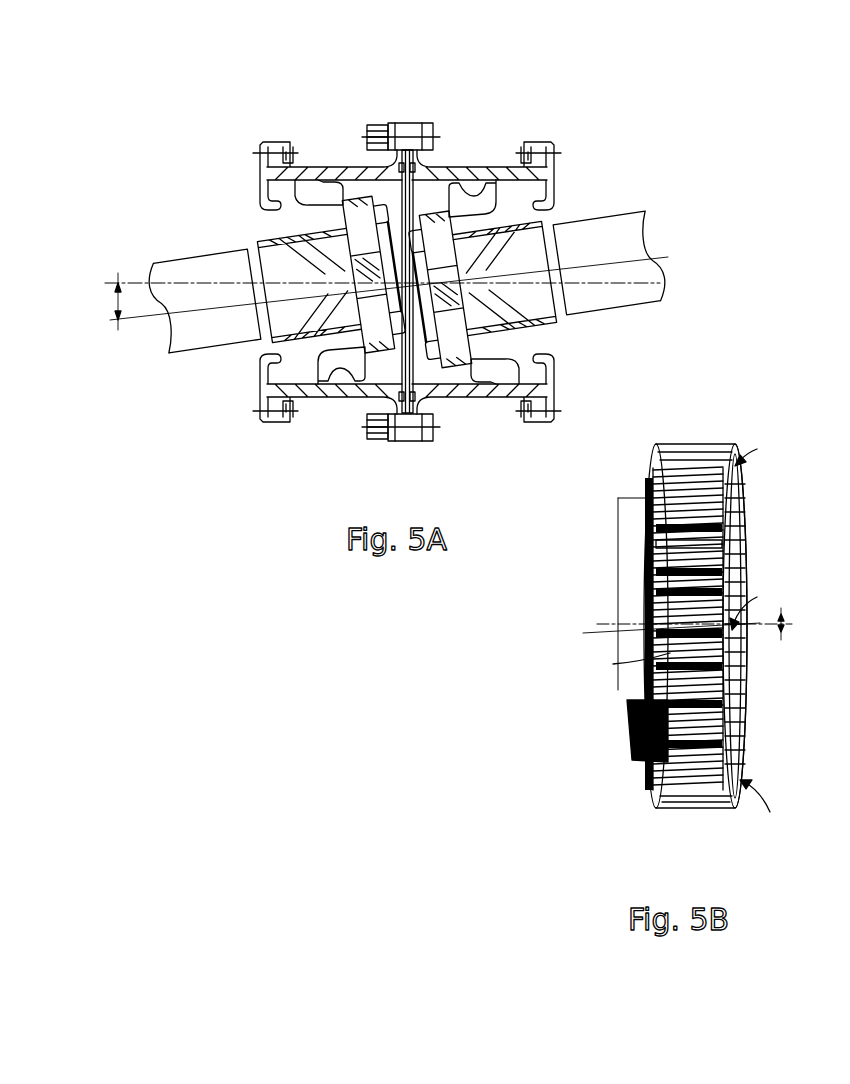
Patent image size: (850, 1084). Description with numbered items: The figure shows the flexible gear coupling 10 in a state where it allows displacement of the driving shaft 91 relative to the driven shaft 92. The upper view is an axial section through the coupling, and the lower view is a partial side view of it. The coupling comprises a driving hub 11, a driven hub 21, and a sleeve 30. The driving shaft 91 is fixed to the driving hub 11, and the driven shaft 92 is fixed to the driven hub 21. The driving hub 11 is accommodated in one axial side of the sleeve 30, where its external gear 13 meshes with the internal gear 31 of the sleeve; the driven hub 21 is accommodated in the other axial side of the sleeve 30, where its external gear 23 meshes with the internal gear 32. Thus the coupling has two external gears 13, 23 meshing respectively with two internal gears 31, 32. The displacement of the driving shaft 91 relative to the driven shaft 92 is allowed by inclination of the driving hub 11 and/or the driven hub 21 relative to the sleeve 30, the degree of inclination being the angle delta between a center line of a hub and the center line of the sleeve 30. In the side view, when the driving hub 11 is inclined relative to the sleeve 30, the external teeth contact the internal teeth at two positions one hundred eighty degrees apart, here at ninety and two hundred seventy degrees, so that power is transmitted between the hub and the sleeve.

In FIG. 5A, the flexible gear coupling 10 is at (655, 122).
In FIG. 5B, the flexible gear coupling 10 is at (695, 803).
In FIG. 5A, the driving hub 11 is at (277, 230).
In FIG. 5B, the driving hub 11 is at (627, 748).
In FIG. 5A, the external gear 13 is at (318, 373).
In FIG. 5B, the external gear 13 is at (660, 543).
In FIG. 5A, the driven hub 21 is at (520, 218).
In FIG. 5A, the external gear 23 is at (508, 380).
In FIG. 5A, the sleeve 30 is at (410, 122).
In FIG. 5B, the sleeve 30 is at (665, 808).
In FIG. 5A, the internal gear 31 is at (302, 387).
In FIG. 5B, the internal gear 31 is at (742, 690).
In FIG. 5A, the internal gear 32 is at (470, 390).
In FIG. 5A, the driving shaft 91 is at (200, 258).
In FIG. 5A, the driven shaft 92 is at (630, 222).